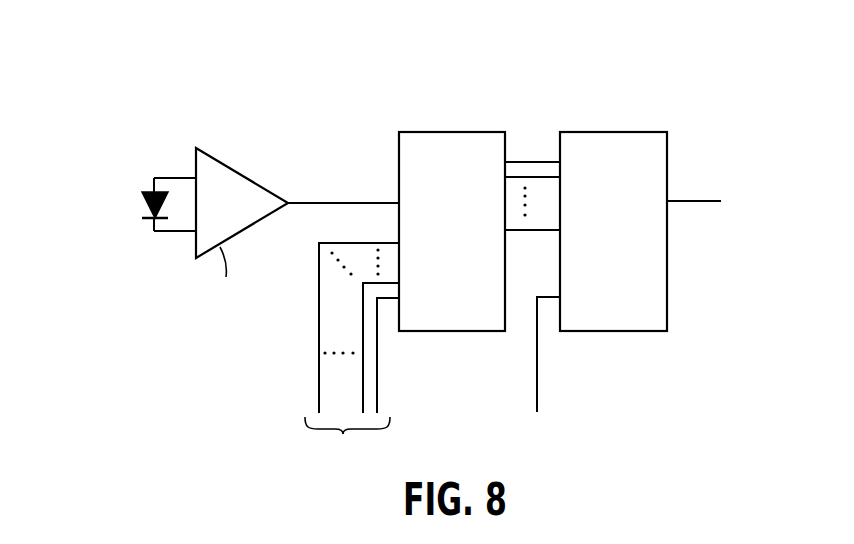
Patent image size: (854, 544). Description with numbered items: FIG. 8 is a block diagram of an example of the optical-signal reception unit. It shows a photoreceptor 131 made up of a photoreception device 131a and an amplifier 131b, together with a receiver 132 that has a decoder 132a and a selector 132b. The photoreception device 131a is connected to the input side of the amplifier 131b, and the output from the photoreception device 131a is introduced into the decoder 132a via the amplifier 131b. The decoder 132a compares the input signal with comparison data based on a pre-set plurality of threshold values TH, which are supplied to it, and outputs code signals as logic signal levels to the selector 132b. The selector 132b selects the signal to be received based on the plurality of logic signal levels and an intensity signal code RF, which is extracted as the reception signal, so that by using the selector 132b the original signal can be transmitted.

The photoreceptor 131 is at (201, 103).
The photoreception device 131a is at (145, 208).
The amplifier 131b is at (227, 165).
The receiver 132 is at (513, 85).
The decoder 132a is at (435, 130).
The selector 132b is at (602, 130).